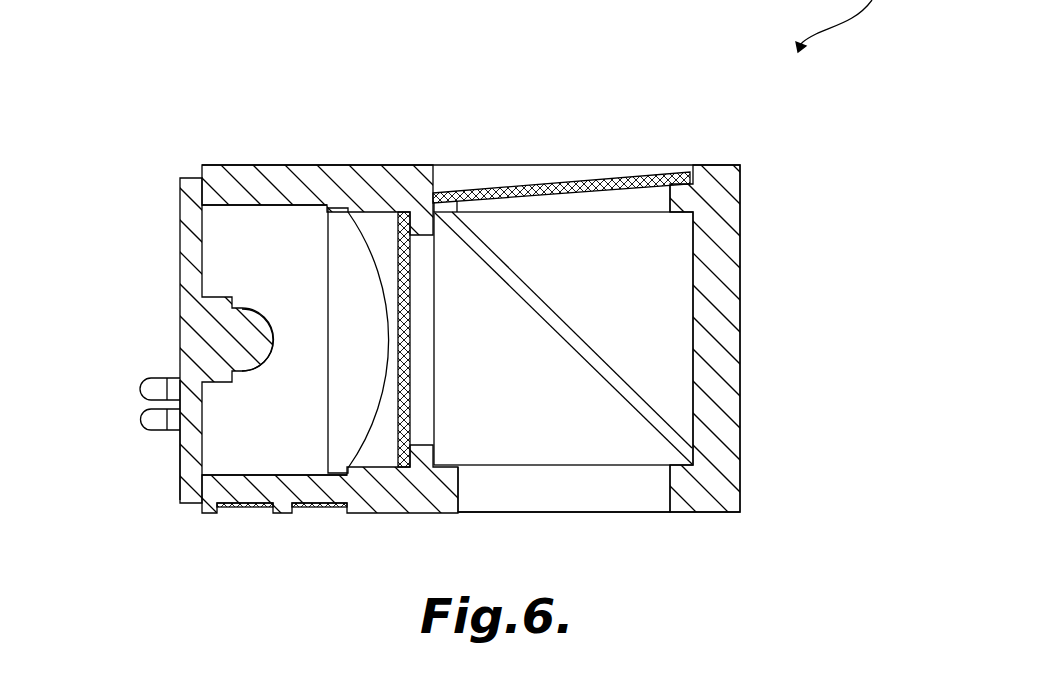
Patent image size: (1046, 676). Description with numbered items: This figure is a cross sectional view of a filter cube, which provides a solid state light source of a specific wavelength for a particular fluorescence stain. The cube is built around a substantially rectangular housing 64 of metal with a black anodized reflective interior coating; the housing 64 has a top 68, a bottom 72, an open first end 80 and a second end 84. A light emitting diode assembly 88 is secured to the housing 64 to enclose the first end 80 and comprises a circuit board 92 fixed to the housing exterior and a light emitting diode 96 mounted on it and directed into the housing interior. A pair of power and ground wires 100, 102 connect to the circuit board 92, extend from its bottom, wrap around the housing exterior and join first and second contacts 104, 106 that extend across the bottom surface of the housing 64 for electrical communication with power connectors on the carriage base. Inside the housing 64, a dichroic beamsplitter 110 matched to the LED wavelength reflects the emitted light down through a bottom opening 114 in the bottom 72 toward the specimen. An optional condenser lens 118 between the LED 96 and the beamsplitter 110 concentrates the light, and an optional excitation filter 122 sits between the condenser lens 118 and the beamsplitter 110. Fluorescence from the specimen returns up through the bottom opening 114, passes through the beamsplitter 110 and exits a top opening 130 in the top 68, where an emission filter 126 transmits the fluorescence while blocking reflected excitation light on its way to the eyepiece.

The housing 64 is at (741, 153).
The top 68 is at (372, 173).
The bottom 72 is at (393, 513).
The open first end 80 is at (202, 166).
The second end 84 is at (742, 281).
The light emitting diode assembly 88 is at (167, 462).
The circuit board 92 is at (190, 255).
The light emitting diode 96 is at (239, 307).
The wire 100 is at (150, 420).
The wire 102 is at (150, 390).
The first contact 104 is at (245, 509).
The second contact 106 is at (318, 509).
The dichroic beamsplitter 110 is at (572, 332).
The bottom opening 114 is at (620, 500).
The condenser lens 118 is at (335, 207).
The excitation filter 122 is at (399, 211).
The emission filter 126 is at (557, 185).
The top opening 130 is at (486, 175).